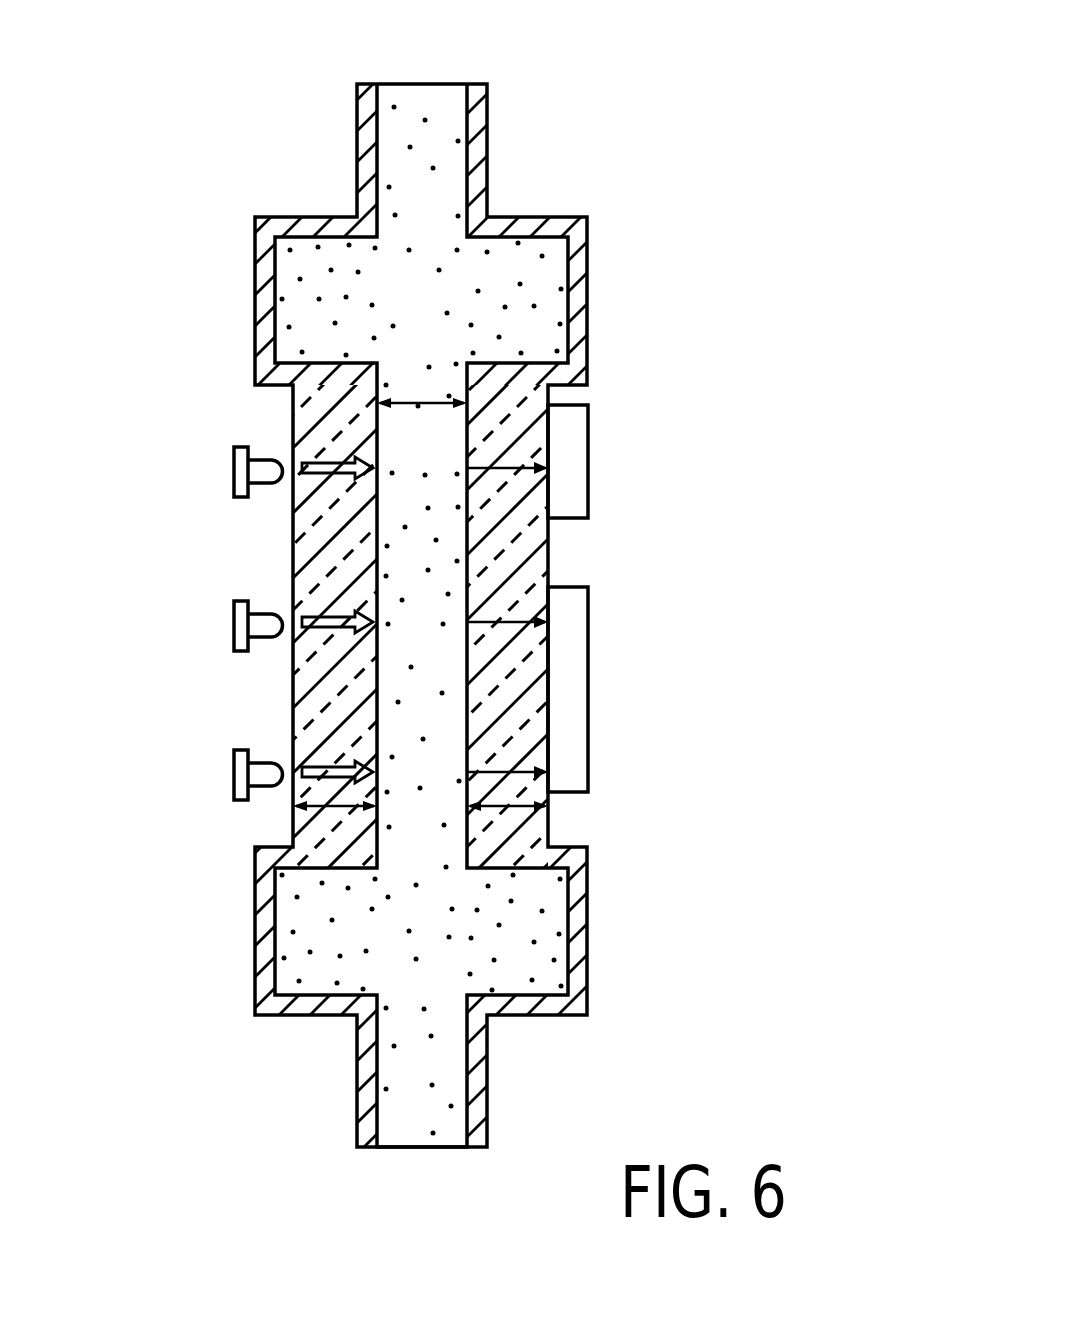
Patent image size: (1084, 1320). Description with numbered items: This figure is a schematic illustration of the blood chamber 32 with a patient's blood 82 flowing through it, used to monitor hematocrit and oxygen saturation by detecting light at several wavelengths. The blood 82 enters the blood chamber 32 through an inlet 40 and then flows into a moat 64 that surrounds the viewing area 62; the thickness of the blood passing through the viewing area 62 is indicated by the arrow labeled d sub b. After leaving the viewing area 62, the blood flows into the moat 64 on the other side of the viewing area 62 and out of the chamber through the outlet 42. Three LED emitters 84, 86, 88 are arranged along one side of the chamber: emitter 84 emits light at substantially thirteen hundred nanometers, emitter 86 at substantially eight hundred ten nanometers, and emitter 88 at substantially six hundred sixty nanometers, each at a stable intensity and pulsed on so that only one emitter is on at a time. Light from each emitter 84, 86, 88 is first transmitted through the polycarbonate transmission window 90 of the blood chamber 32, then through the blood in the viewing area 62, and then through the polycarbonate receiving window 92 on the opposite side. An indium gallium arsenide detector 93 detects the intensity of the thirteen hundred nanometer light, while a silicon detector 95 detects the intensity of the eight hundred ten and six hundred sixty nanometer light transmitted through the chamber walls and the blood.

The blood chamber 32 is at (550, 206).
The inlet 40 is at (483, 142).
The outlet 42 is at (480, 1117).
The viewing area 62 is at (435, 543).
The moat 64 is at (538, 292).
The blood 82 is at (412, 117).
The LED emitter 84 is at (233, 462).
The LED emitter 86 is at (236, 603).
The LED emitter 88 is at (238, 801).
The polycarbonate transmission window 90 is at (295, 672).
The polycarbonate receiving window 92 is at (548, 567).
The indium gallium arsenide detector 93 is at (588, 431).
The silicon detector 95 is at (588, 660).